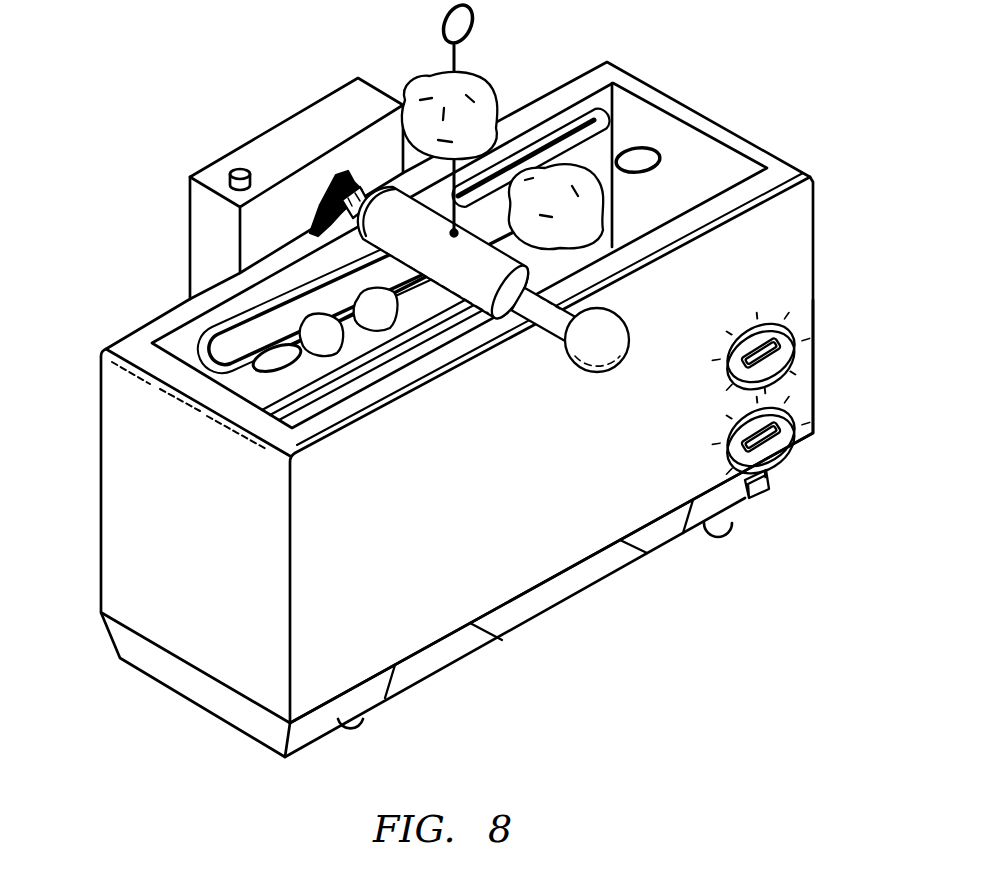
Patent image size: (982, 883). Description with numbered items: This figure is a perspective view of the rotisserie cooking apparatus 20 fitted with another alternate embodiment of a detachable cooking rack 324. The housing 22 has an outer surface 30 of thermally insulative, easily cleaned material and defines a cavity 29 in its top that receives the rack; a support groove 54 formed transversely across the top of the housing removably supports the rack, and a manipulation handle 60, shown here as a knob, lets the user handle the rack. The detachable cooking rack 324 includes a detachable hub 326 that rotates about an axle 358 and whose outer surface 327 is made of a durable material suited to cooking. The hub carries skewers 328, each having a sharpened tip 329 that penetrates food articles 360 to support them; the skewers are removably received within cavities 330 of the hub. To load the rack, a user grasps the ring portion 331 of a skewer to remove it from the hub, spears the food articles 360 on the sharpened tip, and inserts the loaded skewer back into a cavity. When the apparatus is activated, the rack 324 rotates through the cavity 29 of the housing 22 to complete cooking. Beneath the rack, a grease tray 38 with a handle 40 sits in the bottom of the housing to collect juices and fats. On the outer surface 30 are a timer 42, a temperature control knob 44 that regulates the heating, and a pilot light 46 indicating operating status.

The rotisserie cooking apparatus 20 is at (100, 235).
The housing 22 is at (812, 213).
The outer surface 30 is at (818, 298).
The cavity 29 is at (178, 343).
The ring portion 331 is at (254, 364).
The detachable cooking rack 324 is at (525, 140).
The detachable hub 326 is at (392, 210).
The skewers 328 is at (448, 30).
The sharpened tip 329 is at (453, 230).
The cavities 330 is at (446, 255).
The axle 358 is at (358, 190).
The food articles 360 is at (305, 318).
The outer surface 327 is at (470, 358).
The support groove 54 is at (545, 336).
The manipulation handle 60 is at (628, 332).
The temperature control knob 44 is at (758, 332).
The timer 42 is at (728, 446).
The pilot light 46 is at (766, 492).
The handle 40 is at (575, 592).
The grease tray 38 is at (453, 655).